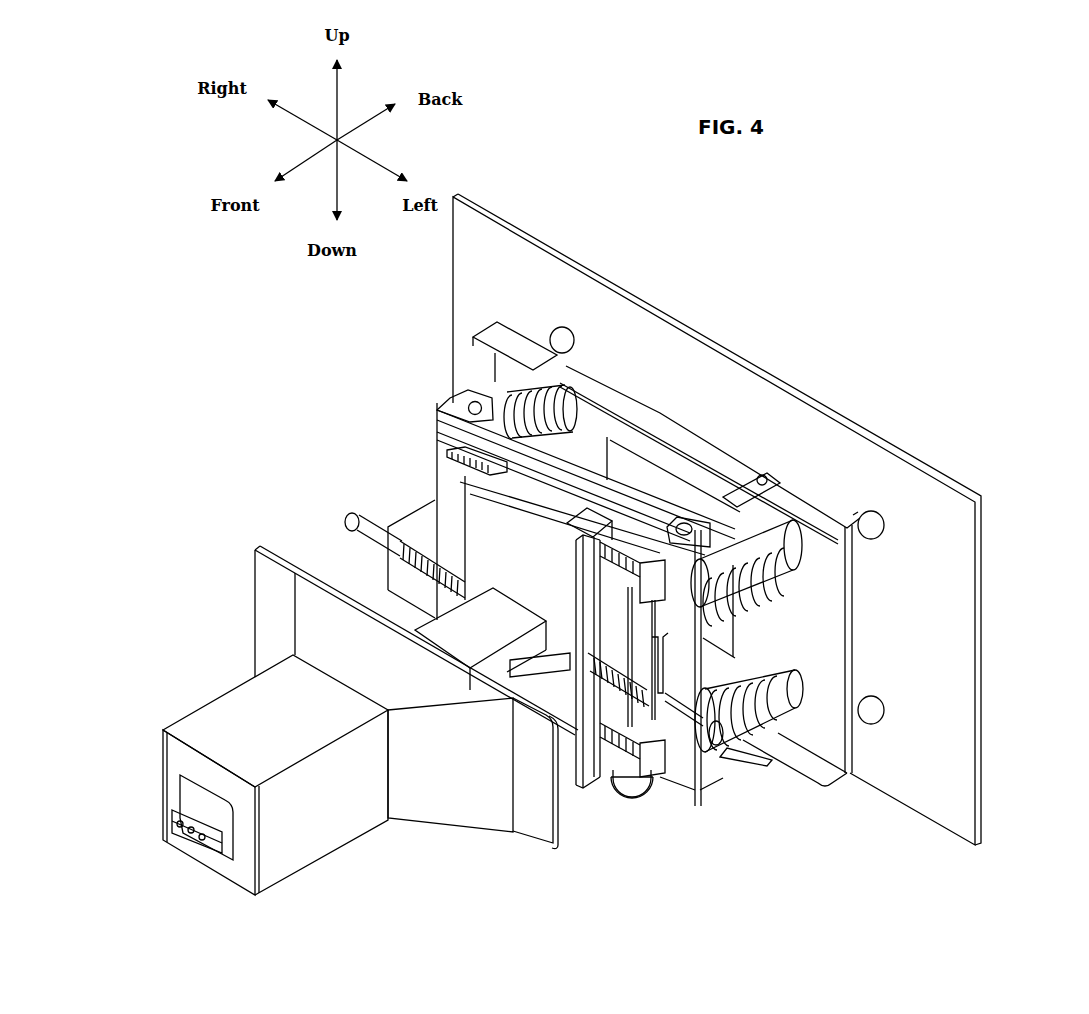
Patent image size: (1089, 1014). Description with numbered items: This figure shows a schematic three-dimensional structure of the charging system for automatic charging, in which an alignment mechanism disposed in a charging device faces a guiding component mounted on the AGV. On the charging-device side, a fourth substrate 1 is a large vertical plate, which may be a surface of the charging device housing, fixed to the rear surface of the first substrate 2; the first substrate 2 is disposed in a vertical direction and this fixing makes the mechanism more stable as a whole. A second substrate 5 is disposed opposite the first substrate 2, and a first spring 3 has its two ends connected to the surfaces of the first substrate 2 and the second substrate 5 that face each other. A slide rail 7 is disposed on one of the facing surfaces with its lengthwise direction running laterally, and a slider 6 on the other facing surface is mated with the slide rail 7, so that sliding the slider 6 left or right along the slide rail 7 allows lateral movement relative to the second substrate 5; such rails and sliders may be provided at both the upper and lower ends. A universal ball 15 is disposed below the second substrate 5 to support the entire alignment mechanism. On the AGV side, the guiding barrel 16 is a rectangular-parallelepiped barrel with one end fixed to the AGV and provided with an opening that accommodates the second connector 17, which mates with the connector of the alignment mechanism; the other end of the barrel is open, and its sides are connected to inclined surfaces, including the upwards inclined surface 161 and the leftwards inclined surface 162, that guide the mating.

The fourth substrate 1 is at (952, 530).
The first substrate 2 is at (815, 653).
The first spring 3 is at (793, 555).
The second substrate 5 is at (677, 785).
The slider 6 is at (505, 468).
The slide rail 7 is at (457, 478).
The universal ball 15 is at (636, 790).
The guiding barrel 16 is at (326, 699).
The upwards inclined surface 161 is at (322, 615).
The leftwards inclined surface 162 is at (447, 793).
The second connector 17 is at (197, 820).